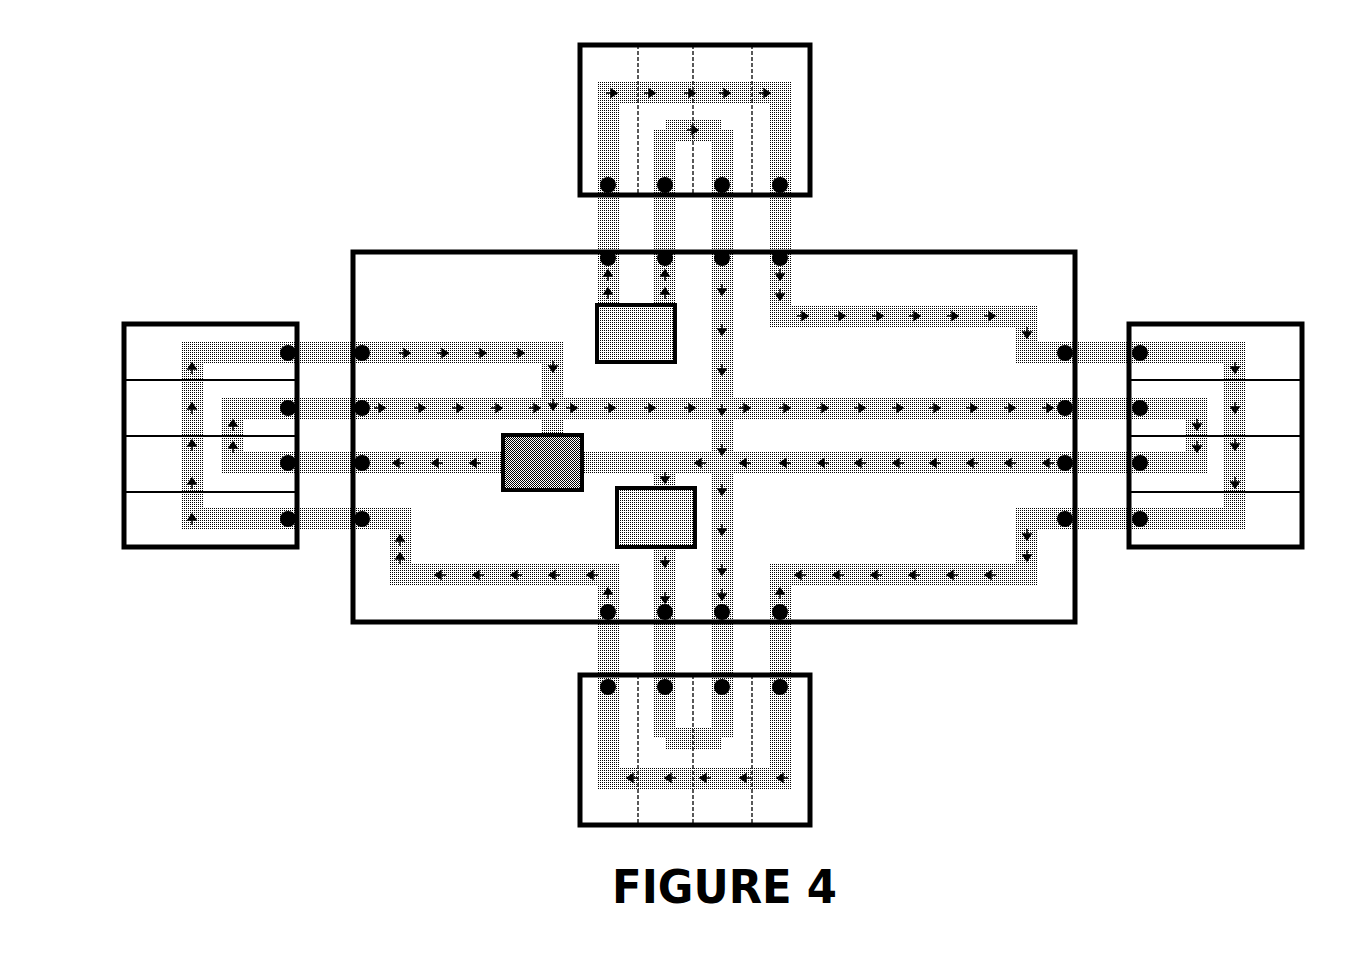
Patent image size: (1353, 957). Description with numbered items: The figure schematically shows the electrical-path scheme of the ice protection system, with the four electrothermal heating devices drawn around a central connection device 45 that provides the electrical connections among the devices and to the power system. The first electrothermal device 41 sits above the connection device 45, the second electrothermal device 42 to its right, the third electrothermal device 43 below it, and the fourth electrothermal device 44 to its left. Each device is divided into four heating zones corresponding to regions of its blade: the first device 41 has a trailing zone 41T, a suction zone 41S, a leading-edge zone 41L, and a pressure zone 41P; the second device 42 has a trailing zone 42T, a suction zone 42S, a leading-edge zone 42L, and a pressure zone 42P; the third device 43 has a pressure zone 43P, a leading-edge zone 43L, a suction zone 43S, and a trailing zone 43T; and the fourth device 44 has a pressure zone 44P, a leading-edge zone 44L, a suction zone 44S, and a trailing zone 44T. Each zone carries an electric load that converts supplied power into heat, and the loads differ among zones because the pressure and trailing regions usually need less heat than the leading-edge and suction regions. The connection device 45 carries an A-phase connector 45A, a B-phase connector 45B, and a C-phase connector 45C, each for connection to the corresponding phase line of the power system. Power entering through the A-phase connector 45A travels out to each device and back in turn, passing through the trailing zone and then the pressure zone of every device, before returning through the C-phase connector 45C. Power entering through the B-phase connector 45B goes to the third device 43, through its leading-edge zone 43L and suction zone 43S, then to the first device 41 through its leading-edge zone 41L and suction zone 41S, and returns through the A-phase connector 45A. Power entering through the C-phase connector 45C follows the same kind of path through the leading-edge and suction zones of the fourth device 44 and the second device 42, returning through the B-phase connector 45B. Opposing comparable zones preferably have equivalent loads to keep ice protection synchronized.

The first electrothermal heating device 41 is at (695, 137).
The second electrothermal heating device 42 is at (1204, 435).
The third electrothermal heating device 43 is at (695, 734).
The fourth electrothermal heating device 44 is at (191, 435).
The connection device 45 is at (695, 436).
The A-phase connector 45A is at (636, 333).
The B-phase connector 45B is at (656, 517).
The C-phase connector 45C is at (542, 462).
The trailing zone of the first device 41T is at (607, 104).
The suction zone of the first device 41S is at (665, 111).
The leading-edge zone of the first device 41L is at (722, 111).
The pressure zone of the first device 41P is at (780, 103).
The trailing zone of the second device 42T is at (1224, 353).
The suction zone of the second device 42S is at (1223, 408).
The leading-edge zone of the second device 42L is at (1222, 463).
The pressure zone of the second device 42P is at (1224, 519).
The pressure zone of the third device 43P is at (608, 760).
The leading-edge zone of the third device 43L is at (665, 758).
The suction zone of the third device 43S is at (722, 758).
The trailing zone of the third device 43T is at (779, 760).
The pressure zone of the fourth device 44P is at (184, 353).
The leading-edge zone of the fourth device 44L is at (193, 408).
The suction zone of the fourth device 44S is at (194, 463).
The trailing zone of the fourth device 44T is at (184, 519).